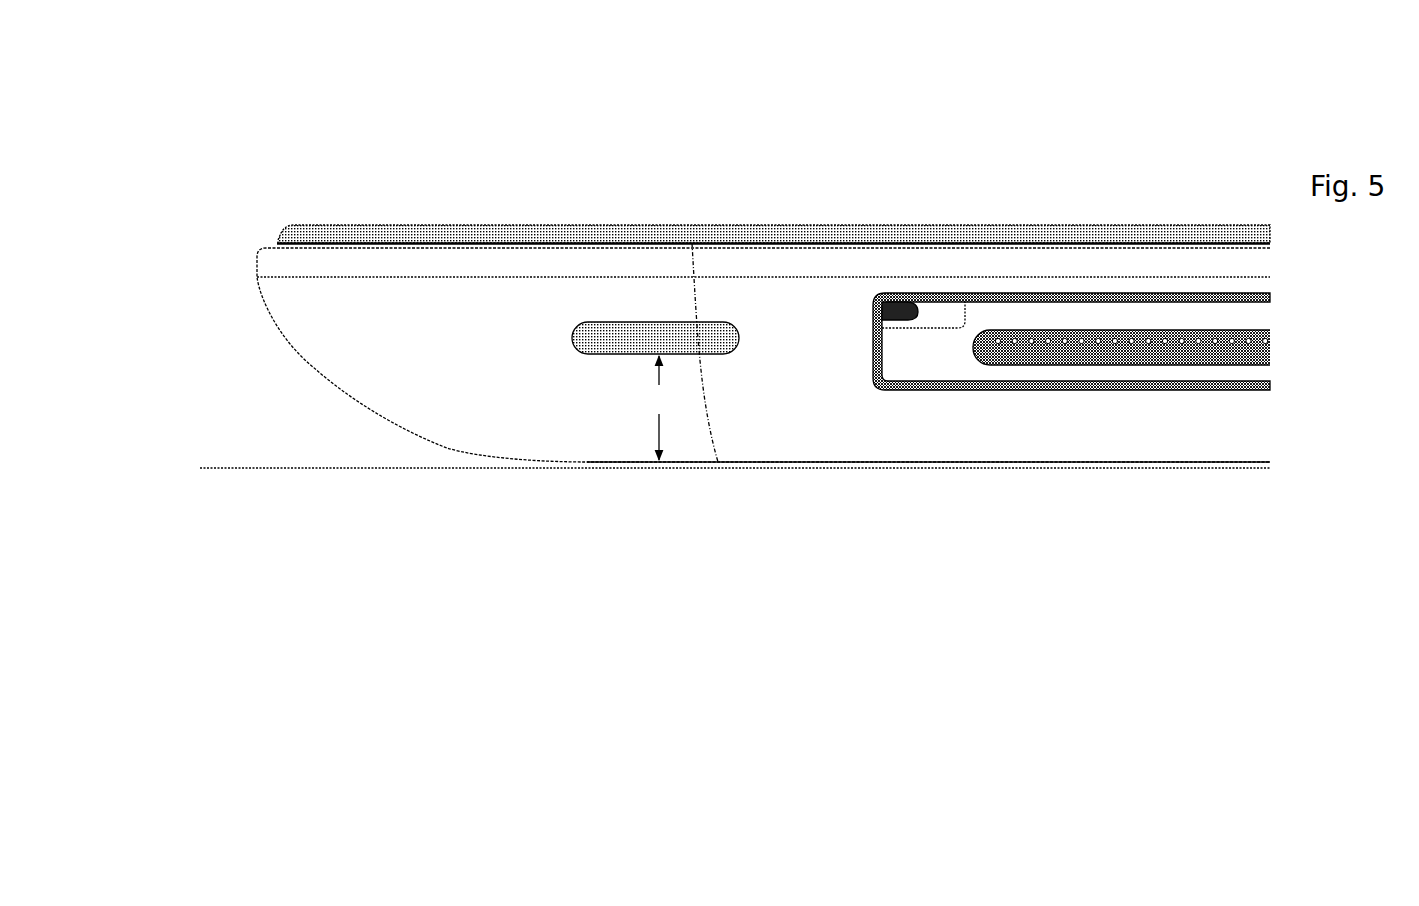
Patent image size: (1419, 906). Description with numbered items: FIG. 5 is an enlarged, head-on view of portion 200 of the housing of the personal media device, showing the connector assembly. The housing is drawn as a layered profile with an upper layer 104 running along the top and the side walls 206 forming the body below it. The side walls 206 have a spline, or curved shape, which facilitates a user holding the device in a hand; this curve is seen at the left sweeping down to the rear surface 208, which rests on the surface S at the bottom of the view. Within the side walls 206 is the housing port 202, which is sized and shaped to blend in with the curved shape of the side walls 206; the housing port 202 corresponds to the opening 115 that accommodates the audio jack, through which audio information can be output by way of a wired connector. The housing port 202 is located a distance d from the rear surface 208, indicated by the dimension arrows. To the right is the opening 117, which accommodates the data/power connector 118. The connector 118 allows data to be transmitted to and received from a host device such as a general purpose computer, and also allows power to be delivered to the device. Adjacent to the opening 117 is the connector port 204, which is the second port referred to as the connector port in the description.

The portion 200 is at (1075, 109).
The top cover / housing layer 104 is at (433, 221).
The side walls 206 is at (763, 355).
The rear surface 208 is at (583, 465).
The housing port 202 is at (600, 327).
The opening 115 is at (670, 319).
The opening 117 is at (1004, 291).
The connector port 204 is at (926, 313).
The data/power connector 118 is at (1135, 364).
The support surface S is at (237, 468).
The distance d is at (658, 408).